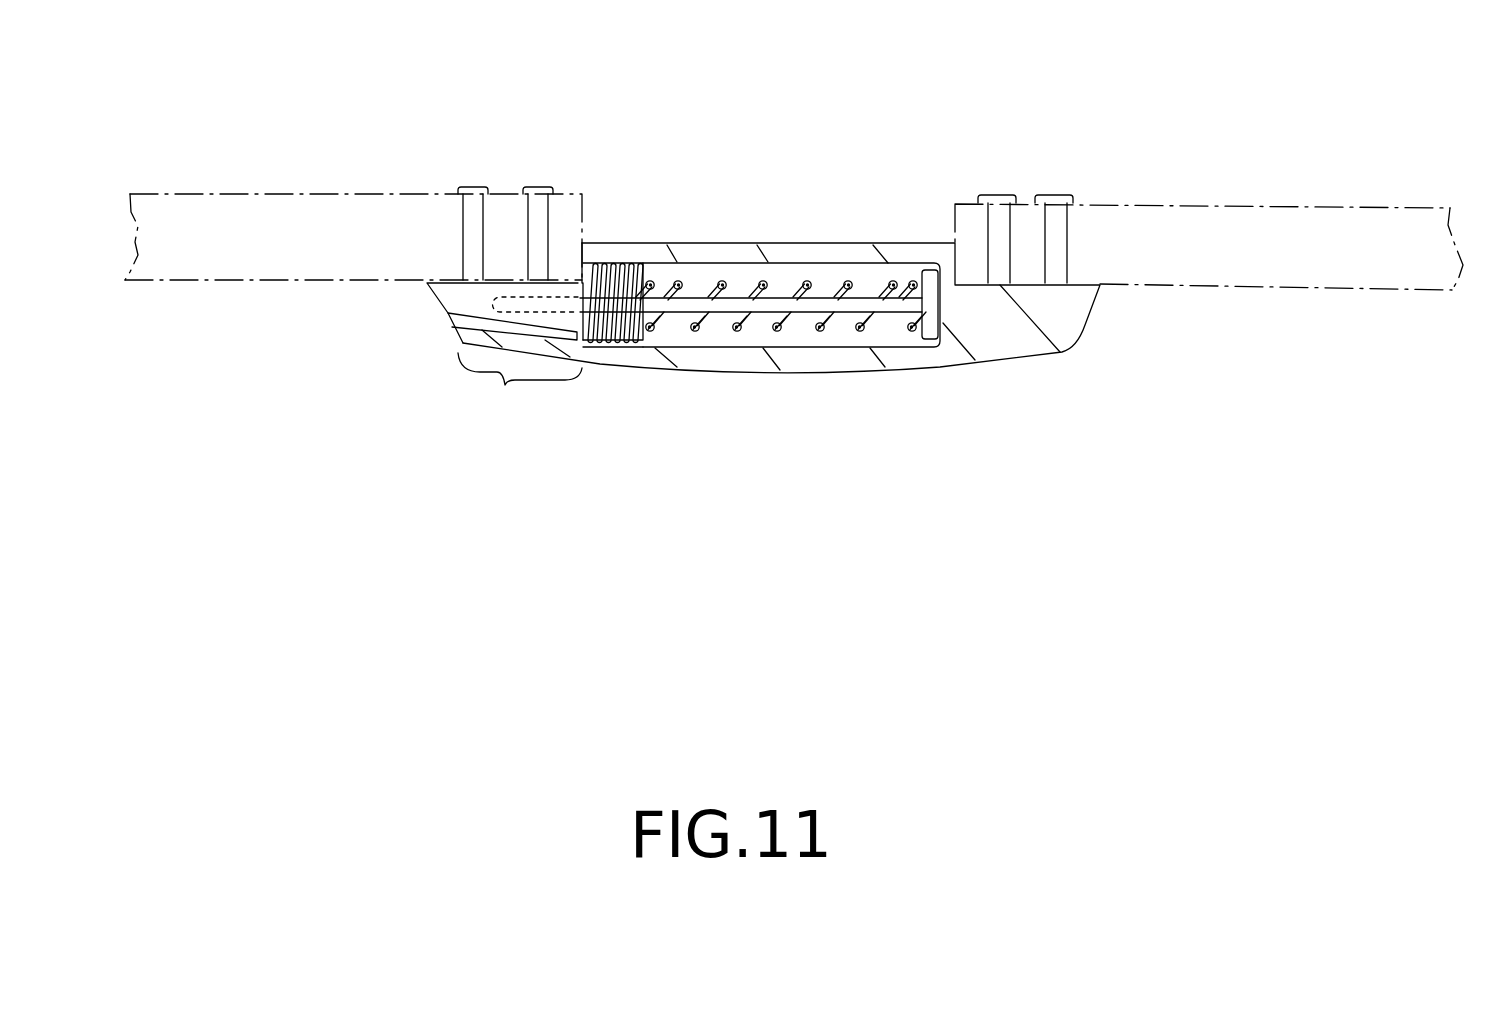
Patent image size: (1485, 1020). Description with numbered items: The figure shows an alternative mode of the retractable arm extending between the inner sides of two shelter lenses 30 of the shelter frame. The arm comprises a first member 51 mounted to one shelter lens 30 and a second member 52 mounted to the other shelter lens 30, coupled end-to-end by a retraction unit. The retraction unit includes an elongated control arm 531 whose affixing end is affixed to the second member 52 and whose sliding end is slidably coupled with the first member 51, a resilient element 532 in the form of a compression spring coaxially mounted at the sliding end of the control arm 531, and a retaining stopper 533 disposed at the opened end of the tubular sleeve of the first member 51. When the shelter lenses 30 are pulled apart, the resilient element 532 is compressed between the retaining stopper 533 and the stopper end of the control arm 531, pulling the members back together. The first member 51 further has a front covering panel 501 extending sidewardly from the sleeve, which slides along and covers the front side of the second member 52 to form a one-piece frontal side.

The shelter lens 30 is at (177, 220).
The first member 51 is at (998, 333).
The front covering panel 501 is at (505, 387).
The second member 52 is at (452, 297).
The control arm 531 is at (805, 287).
The resilient element 532 is at (742, 305).
The retaining stopper 533 is at (619, 275).